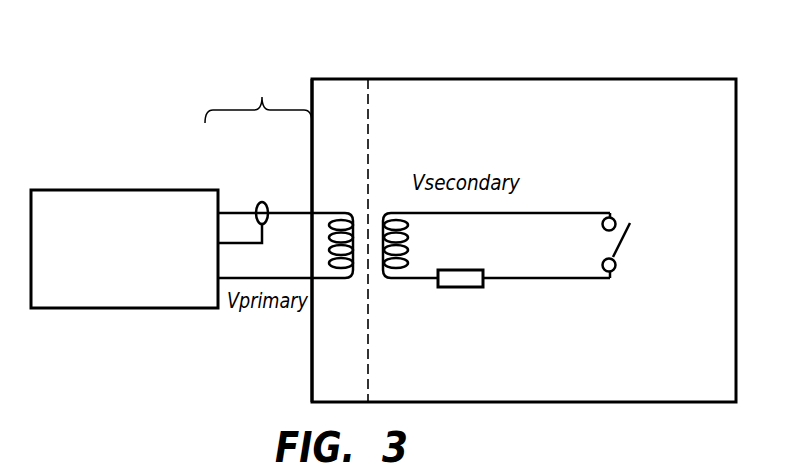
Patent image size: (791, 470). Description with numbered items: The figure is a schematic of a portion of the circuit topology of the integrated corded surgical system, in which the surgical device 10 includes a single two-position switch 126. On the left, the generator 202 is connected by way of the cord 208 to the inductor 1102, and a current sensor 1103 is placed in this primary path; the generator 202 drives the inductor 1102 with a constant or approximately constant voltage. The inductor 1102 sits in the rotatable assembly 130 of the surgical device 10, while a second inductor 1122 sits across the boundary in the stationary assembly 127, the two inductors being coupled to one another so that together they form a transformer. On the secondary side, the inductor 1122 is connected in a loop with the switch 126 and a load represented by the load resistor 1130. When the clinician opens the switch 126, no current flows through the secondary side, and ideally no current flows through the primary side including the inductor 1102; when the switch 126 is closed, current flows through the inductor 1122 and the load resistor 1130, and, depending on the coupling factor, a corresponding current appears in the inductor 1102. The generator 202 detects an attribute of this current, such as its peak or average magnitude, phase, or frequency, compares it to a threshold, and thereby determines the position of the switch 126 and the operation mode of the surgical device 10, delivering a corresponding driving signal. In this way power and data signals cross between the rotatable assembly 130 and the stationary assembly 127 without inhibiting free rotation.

The surgical device 10 is at (660, 78).
The rotatable assembly 130 is at (357, 107).
The stationary assembly 127 is at (412, 107).
The generator 202 is at (144, 275).
The cord 208 is at (282, 89).
The current sensor 1103 is at (262, 202).
The inductor 1102 is at (350, 212).
The inductor 1122 is at (392, 279).
The load resistor 1130 is at (475, 288).
The switch 126 is at (617, 253).